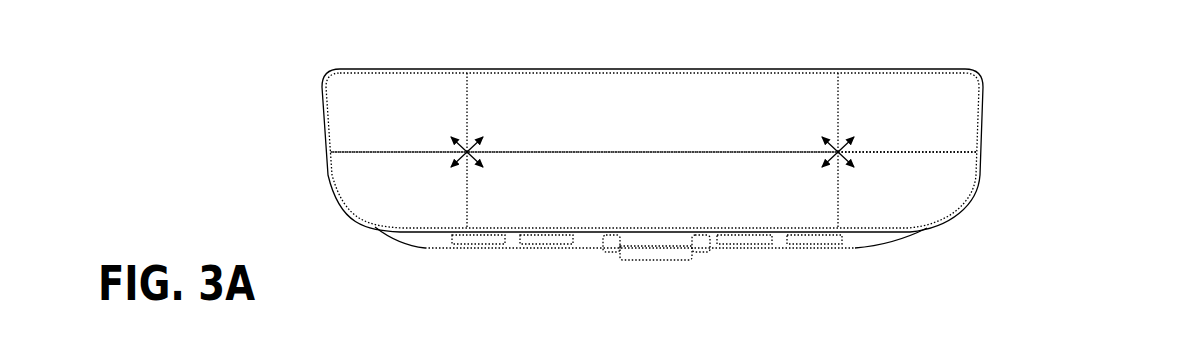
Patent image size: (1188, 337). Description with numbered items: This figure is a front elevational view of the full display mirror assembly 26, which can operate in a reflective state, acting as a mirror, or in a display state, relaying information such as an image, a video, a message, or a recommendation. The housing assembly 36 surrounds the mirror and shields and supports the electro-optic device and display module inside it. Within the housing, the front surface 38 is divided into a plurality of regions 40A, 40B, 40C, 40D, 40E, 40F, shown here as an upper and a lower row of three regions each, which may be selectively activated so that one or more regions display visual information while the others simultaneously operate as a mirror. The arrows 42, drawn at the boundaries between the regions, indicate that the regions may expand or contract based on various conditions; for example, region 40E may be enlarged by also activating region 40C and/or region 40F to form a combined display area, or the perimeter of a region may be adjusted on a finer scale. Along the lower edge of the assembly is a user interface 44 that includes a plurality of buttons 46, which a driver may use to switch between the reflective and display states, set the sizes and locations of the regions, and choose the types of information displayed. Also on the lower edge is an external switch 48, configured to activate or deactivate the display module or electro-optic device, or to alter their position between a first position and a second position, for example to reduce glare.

The full display mirror assembly 26 is at (1046, 116).
The housing assembly 36 is at (323, 155).
The front surface 38 is at (945, 175).
The region 40A is at (418, 126).
The region 40B is at (418, 197).
The region 40C is at (642, 126).
The region 40D is at (642, 196).
The region 40E is at (923, 127).
The region 40F is at (923, 197).
The arrows 42 is at (477, 145).
The user interface 44 is at (861, 240).
The buttons 46 is at (483, 239).
The external switch 48 is at (640, 255).